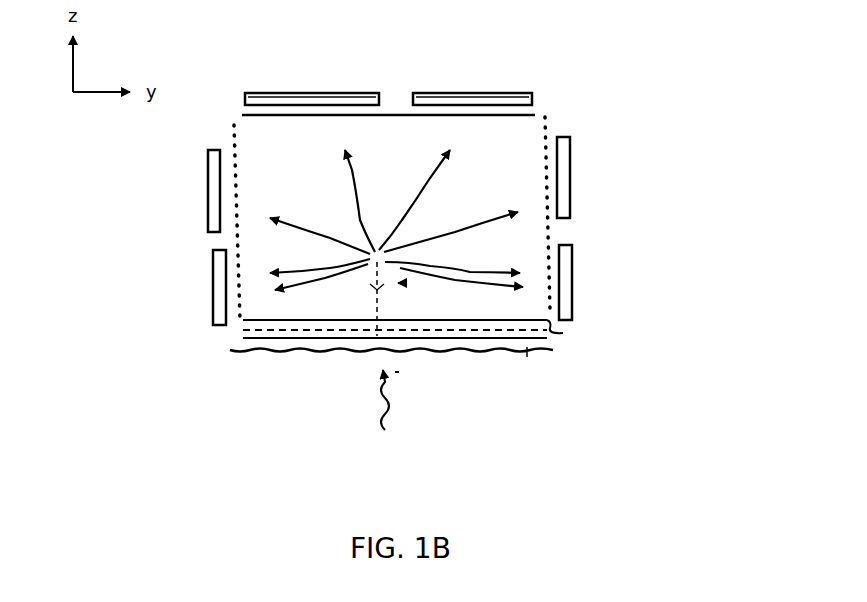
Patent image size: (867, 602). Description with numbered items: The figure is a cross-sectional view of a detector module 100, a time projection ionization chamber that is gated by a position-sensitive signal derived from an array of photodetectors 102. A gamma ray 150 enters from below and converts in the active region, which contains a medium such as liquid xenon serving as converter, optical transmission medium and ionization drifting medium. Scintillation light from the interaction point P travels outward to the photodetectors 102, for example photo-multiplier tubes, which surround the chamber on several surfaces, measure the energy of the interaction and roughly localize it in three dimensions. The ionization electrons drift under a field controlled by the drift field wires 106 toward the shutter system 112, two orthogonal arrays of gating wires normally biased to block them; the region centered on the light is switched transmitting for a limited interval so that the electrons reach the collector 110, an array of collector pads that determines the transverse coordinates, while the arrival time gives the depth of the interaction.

The detector module 100 is at (146, 151).
The photodetectors 102 is at (596, 262).
The drift field wires 106 is at (548, 103).
The collector 110 is at (236, 349).
The shutter system 112 is at (563, 332).
The gamma ray 150 is at (397, 443).